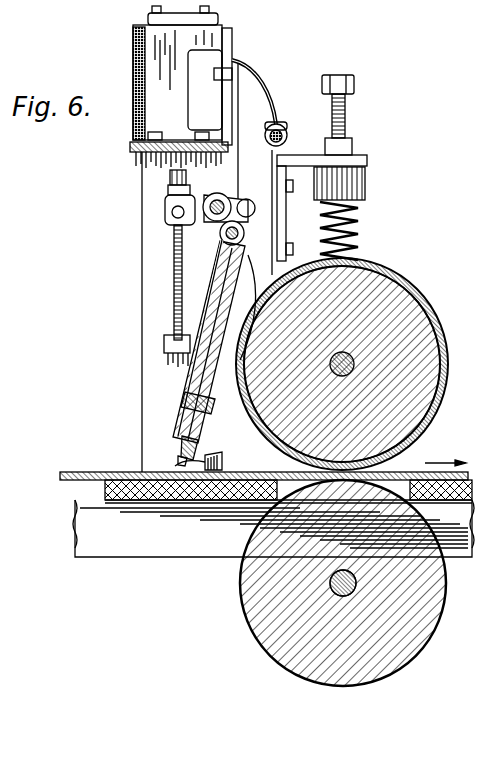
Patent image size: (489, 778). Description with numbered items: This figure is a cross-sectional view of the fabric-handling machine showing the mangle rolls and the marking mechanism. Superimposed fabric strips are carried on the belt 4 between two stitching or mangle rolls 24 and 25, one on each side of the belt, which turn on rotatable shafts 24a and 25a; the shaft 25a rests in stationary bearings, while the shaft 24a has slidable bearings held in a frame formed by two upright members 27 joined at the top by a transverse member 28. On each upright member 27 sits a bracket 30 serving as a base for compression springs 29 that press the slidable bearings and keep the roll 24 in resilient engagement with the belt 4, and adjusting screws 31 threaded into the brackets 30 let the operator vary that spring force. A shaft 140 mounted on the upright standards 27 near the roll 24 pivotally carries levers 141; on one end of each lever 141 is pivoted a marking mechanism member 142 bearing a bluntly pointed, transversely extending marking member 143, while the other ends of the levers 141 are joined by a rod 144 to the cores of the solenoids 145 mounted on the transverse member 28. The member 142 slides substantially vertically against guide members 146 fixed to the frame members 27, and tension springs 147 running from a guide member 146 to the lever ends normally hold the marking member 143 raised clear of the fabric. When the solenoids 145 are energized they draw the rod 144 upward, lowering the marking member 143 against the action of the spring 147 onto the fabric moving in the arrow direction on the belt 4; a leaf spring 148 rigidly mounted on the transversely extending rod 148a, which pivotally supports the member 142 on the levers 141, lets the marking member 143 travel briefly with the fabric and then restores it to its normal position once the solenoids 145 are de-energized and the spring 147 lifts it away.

The belt 4 is at (70, 472).
The stitching or mangle roll 24 is at (436, 328).
The rotatable shaft 24a is at (353, 362).
The stitching or mangle roll 25 is at (432, 624).
The rotatable shaft 25a is at (356, 583).
The upright member 27 is at (142, 211).
The transverse member 28 is at (130, 148).
The compression spring 29 is at (362, 236).
The bracket 30 is at (367, 160).
The adjusting screw 31 is at (354, 88).
The shaft 140 is at (217, 193).
The lever 141 is at (172, 240).
The marking mechanism member 142 is at (184, 429).
The marking member 143 is at (175, 463).
The rod 144 is at (170, 198).
The electrical magnet or solenoid 145 is at (137, 61).
The guide member 146 is at (164, 344).
The tension spring 147 is at (174, 260).
The leaf spring 148 is at (243, 268).
The transversely extending rod 148a is at (256, 102).